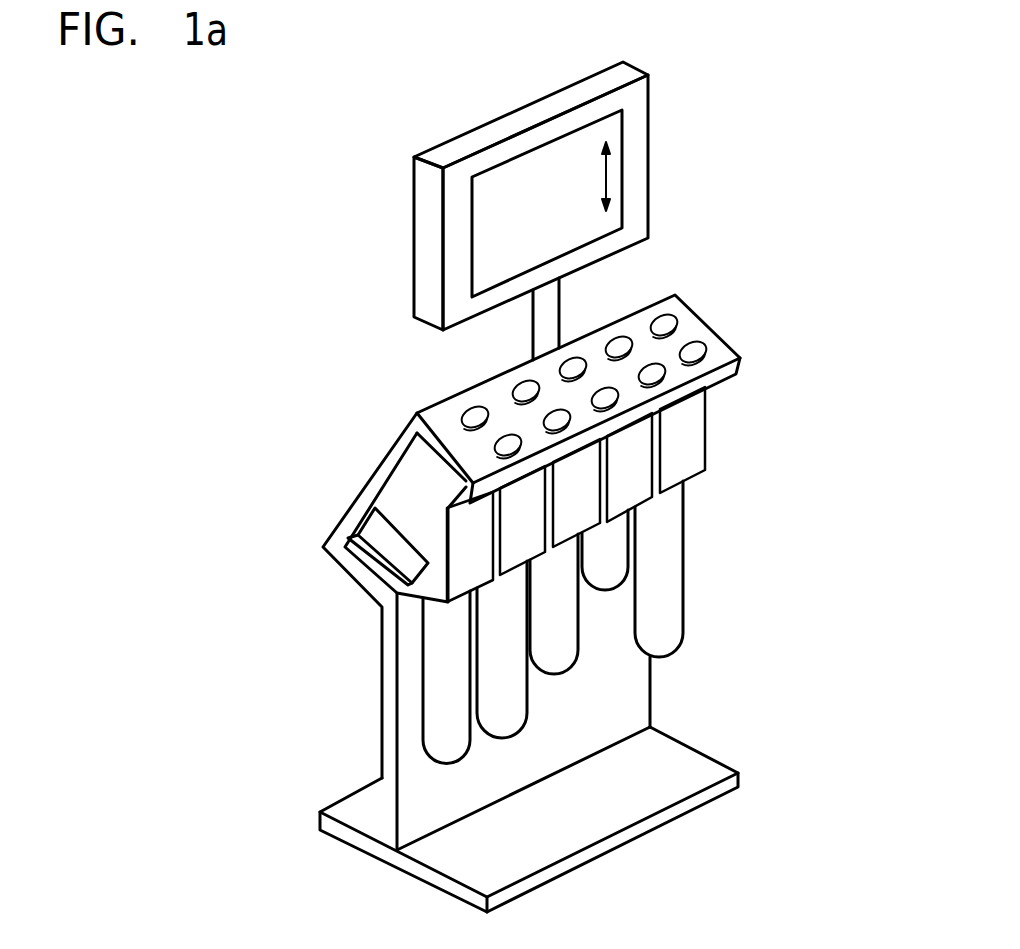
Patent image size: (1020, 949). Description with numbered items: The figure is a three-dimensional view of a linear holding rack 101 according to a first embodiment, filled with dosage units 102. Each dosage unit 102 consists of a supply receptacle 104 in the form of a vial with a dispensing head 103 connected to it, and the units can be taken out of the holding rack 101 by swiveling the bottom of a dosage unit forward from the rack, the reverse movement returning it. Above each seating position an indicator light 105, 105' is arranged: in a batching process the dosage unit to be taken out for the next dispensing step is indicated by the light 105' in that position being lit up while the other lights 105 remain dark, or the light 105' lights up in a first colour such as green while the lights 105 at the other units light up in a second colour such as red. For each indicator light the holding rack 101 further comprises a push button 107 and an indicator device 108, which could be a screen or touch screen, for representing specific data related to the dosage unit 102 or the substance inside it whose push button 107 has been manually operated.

The linear holding rack 101 is at (348, 406).
The dosage unit 102 is at (716, 492).
The dispensing head 103 is at (681, 441).
The supply receptacle 104 is at (658, 603).
The indicator light 105 is at (564, 332).
The indicator light 105' is at (712, 250).
The push button 107 is at (652, 374).
The indicator device 108 is at (633, 136).